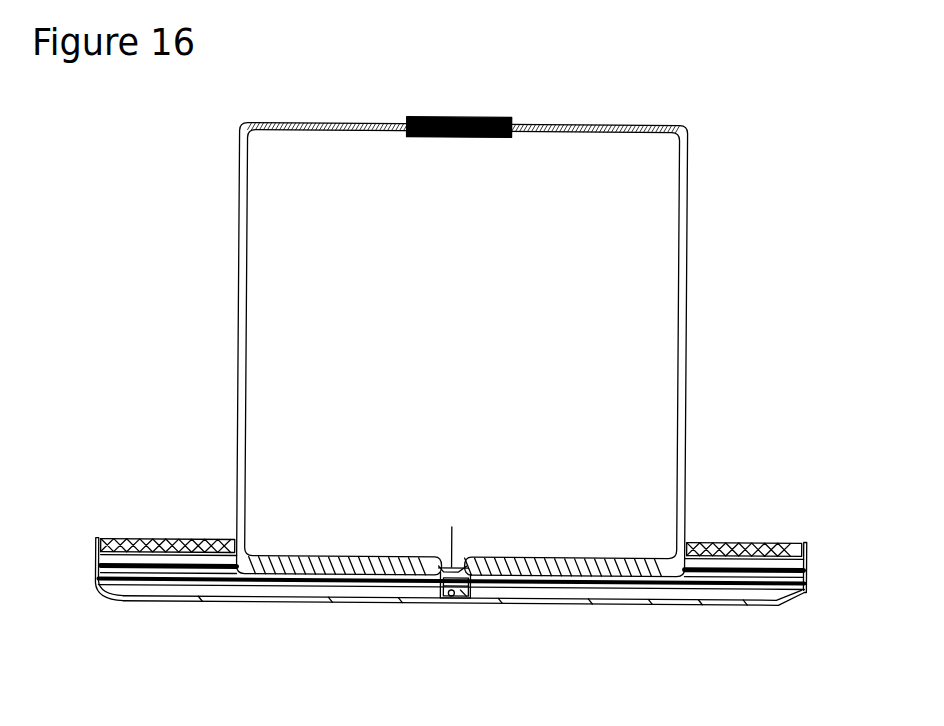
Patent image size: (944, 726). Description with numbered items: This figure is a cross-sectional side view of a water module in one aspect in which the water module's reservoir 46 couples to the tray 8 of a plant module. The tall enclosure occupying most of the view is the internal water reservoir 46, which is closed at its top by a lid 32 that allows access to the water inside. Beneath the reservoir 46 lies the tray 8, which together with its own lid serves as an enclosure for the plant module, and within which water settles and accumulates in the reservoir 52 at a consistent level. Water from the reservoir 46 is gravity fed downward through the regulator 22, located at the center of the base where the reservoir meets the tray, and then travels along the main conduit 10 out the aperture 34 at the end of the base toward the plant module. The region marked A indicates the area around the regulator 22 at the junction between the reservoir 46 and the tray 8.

The tray 8 is at (260, 603).
The main conduit 10 is at (190, 581).
The regulator 22 is at (466, 578).
The lid 32 is at (463, 118).
The aperture 34 is at (810, 585).
The water reservoir 46 is at (604, 313).
The reservoir 52 is at (160, 590).
The detail region A is at (452, 572).